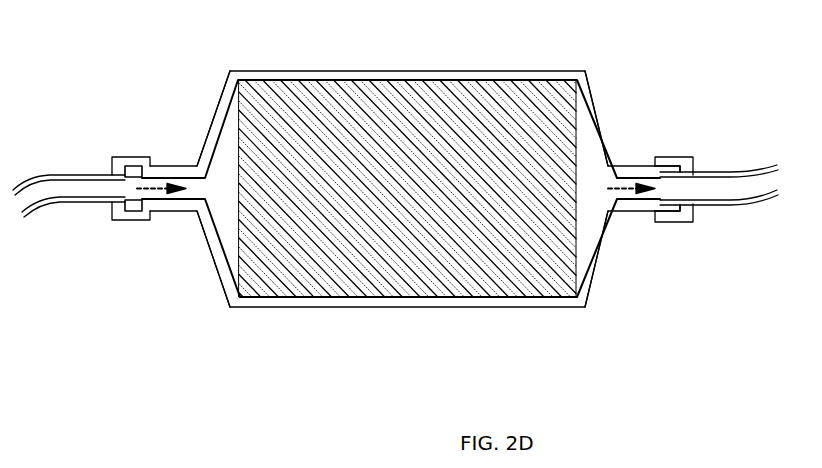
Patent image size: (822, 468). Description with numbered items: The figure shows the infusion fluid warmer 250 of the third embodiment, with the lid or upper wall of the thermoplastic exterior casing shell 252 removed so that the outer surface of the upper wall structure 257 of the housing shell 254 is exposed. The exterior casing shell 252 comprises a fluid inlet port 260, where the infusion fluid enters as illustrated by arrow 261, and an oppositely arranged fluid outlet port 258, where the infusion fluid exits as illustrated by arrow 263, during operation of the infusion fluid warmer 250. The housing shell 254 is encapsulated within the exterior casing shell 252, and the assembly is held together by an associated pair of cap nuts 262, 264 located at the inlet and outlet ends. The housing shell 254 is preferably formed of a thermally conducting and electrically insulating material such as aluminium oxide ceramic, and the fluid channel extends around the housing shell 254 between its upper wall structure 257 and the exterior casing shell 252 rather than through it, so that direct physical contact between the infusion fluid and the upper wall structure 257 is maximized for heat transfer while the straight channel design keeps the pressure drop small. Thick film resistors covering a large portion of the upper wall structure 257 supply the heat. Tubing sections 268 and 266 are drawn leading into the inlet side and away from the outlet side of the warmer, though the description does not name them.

The infusion fluid warmer 250 is at (165, 350).
The exterior casing shell 252 is at (232, 68).
The housing shell 254 is at (590, 83).
The upper wall structure 257 is at (573, 80).
The fluid outlet port 258 is at (612, 213).
The fluid inlet port 260 is at (220, 195).
The arrow 261 is at (172, 165).
The cap nut 262 is at (112, 156).
The arrow 263 is at (645, 166).
The cap nut 264 is at (689, 157).
The outlet tubing 266 is at (765, 200).
The inlet tubing 268 is at (77, 213).